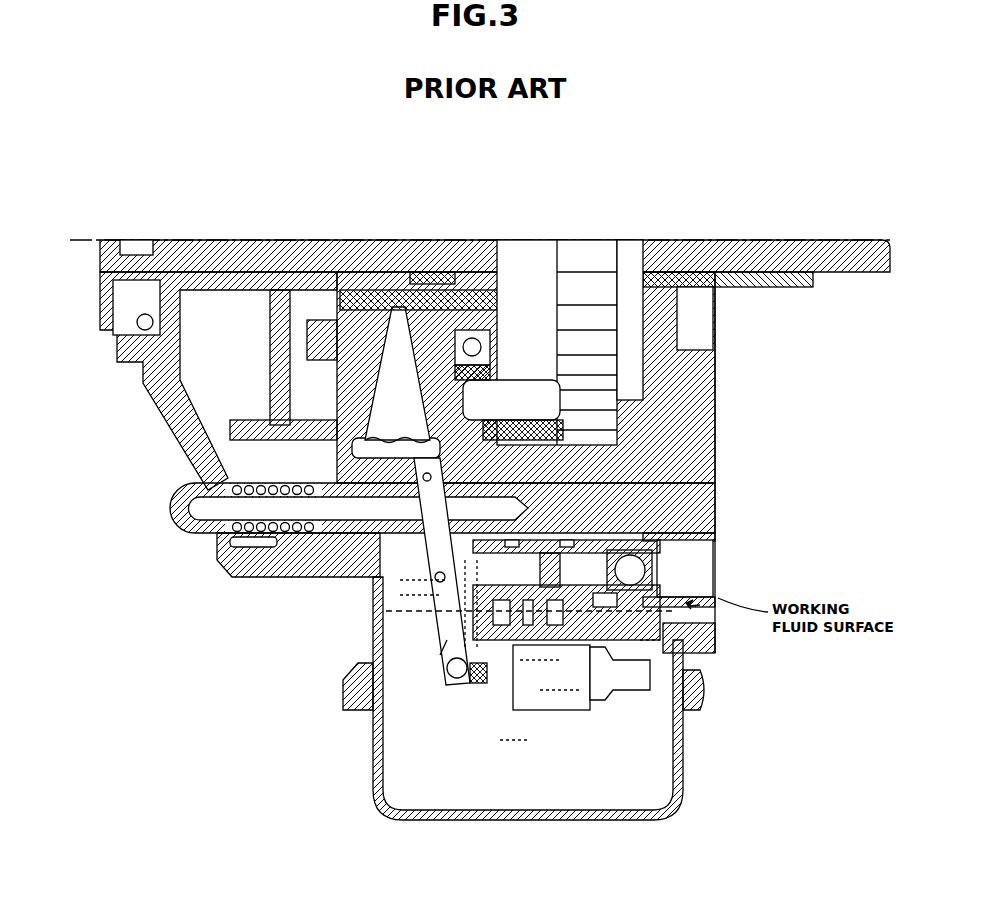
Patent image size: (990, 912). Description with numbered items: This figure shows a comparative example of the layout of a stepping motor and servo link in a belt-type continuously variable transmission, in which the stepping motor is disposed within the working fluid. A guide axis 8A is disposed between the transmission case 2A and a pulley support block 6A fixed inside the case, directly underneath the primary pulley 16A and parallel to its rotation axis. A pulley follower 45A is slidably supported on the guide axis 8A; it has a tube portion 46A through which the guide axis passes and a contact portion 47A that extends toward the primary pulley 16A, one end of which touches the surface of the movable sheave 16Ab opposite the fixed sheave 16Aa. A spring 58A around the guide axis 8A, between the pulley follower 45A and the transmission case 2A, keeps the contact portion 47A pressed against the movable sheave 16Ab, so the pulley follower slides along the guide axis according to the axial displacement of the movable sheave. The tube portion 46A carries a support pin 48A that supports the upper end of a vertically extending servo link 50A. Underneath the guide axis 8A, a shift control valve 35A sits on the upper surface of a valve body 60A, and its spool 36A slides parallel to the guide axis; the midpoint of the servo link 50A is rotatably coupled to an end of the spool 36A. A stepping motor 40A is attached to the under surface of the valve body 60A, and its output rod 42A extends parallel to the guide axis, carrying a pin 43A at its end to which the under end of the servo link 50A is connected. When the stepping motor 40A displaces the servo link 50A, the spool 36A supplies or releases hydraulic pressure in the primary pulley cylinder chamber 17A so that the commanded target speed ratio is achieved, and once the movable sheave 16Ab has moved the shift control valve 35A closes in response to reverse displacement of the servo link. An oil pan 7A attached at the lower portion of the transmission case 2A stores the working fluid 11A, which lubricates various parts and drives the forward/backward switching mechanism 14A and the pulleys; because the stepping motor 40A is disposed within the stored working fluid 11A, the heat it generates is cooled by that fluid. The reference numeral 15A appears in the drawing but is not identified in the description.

The transmission case 2A is at (140, 388).
The pulley support block 6A is at (716, 493).
The oil pan 7A is at (373, 770).
The guide axis 8A is at (200, 538).
The working fluid 11A is at (684, 757).
The forward/backward switching mechanism 14A is at (537, 250).
The top plate 15A is at (858, 275).
The primary pulley 16A is at (393, 248).
The fixed sheave 16Aa is at (421, 262).
The movable sheave 16Ab is at (372, 302).
The primary pulley cylinder chamber 17A is at (283, 394).
The shift control valve 35A is at (716, 549).
The spool 36A is at (440, 635).
The stepping motor 40A is at (570, 712).
The output rod 42A is at (490, 683).
The pin 43A is at (455, 690).
The pulley follower 45A is at (322, 580).
The tube portion 46A is at (320, 487).
The contact portion 47A is at (345, 480).
The support pin 48A is at (436, 582).
The servo link 50A is at (462, 660).
The spring 58A is at (278, 565).
The valve body 60A is at (665, 572).